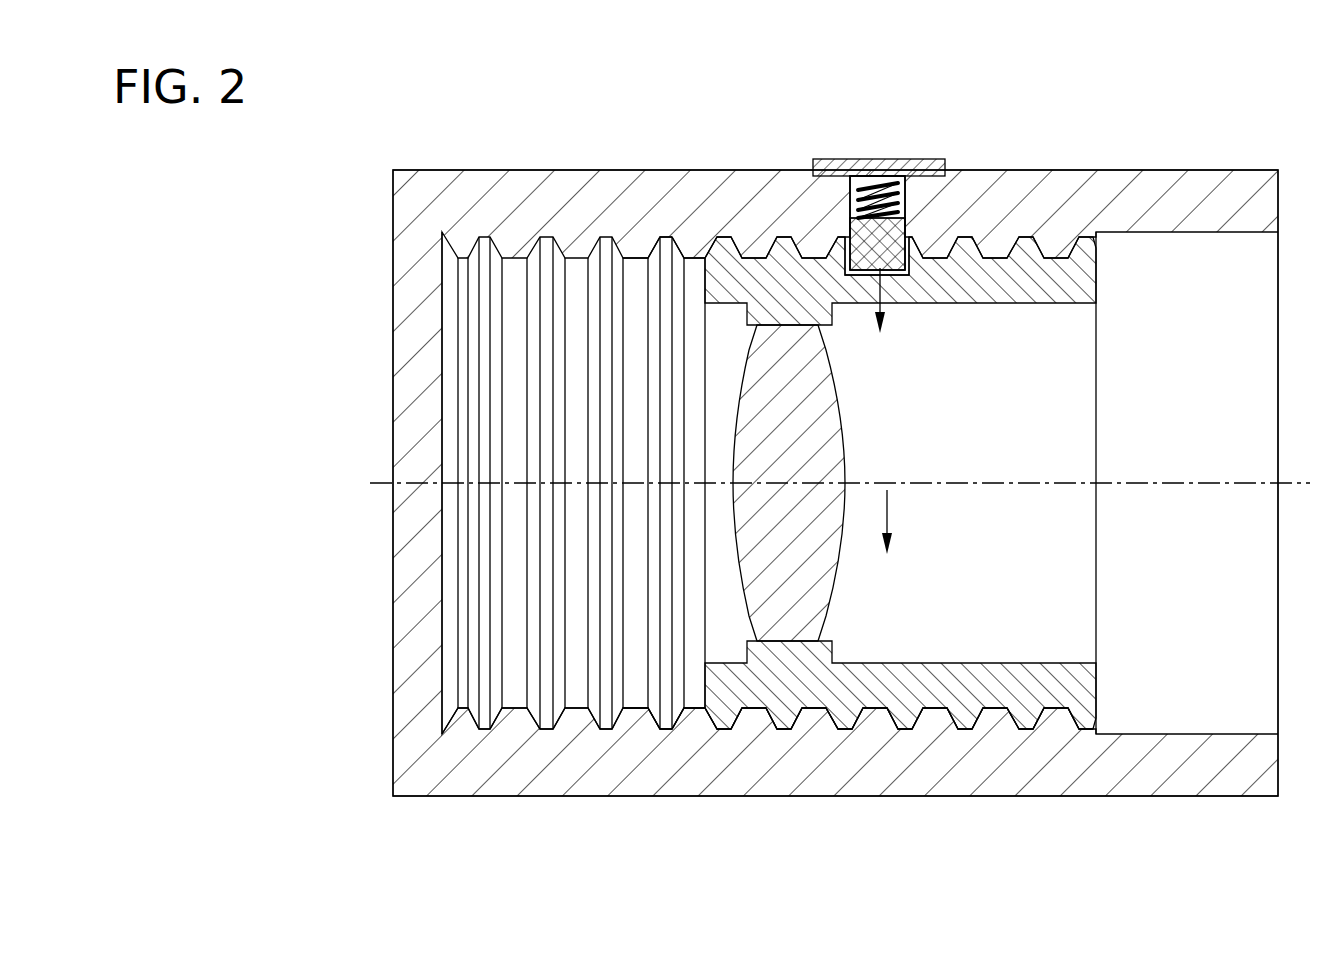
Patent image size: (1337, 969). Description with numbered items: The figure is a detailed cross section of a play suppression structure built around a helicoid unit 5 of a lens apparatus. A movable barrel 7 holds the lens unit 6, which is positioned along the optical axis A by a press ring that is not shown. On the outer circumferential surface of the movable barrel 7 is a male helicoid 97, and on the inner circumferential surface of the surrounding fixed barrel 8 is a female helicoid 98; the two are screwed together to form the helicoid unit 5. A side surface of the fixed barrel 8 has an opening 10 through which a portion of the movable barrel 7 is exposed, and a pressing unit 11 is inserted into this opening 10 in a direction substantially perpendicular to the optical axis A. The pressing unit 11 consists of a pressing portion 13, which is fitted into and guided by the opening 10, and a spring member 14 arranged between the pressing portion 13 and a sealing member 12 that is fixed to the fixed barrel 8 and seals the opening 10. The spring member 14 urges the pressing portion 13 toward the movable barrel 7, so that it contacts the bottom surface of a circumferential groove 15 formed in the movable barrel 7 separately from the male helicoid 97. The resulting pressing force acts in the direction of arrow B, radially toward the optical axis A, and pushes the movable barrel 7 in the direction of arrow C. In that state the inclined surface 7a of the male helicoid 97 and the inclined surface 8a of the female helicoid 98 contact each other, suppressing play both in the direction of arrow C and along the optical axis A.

The helicoid unit 5 is at (380, 100).
The lens unit 6 is at (792, 645).
The movable barrel 7 is at (1031, 282).
The inclined surface 7a is at (893, 714).
The fixed barrel 8 is at (1196, 186).
The inclined surface 8a is at (883, 730).
The opening 10 is at (850, 213).
The pressing unit 11 is at (878, 117).
The sealing member 12 is at (838, 168).
The pressing portion 13 is at (905, 228).
The spring member 14 is at (885, 178).
The groove 15 is at (852, 282).
The male helicoid 97 is at (695, 257).
The female helicoid 98 is at (643, 257).
The optical axis A is at (373, 492).
The arrow B is at (880, 316).
The arrow C is at (887, 538).